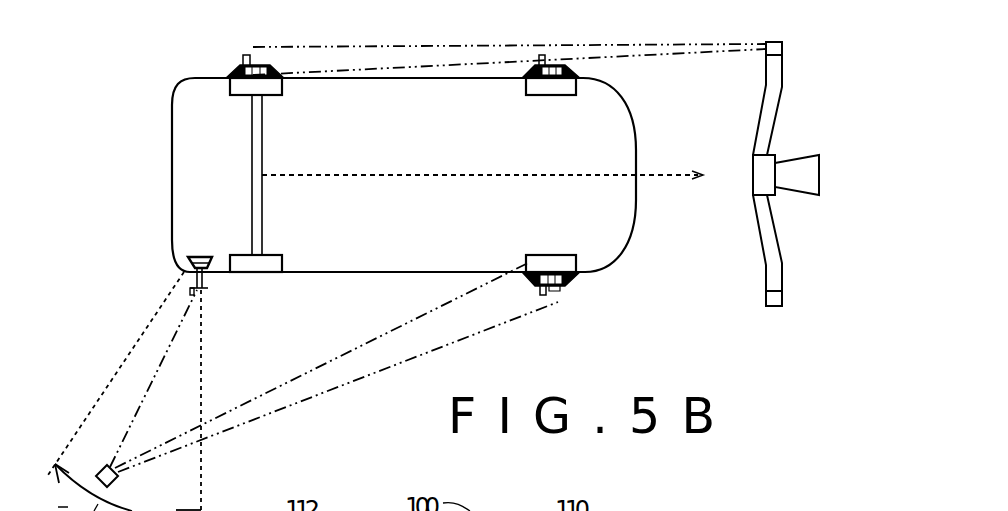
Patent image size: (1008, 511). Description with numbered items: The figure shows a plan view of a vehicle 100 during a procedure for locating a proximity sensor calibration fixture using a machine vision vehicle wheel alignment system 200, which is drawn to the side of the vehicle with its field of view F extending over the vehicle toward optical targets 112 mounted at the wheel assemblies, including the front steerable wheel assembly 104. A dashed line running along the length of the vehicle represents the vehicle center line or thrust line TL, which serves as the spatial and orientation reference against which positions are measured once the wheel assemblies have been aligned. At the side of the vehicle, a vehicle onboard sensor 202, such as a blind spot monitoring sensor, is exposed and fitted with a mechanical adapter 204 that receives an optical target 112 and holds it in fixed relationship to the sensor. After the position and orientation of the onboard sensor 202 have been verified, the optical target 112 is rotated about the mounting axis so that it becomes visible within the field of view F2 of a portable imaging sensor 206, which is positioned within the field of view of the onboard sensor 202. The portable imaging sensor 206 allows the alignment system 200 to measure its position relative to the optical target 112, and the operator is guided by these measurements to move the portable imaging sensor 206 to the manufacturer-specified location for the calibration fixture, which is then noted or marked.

The vehicle 100 is at (434, 112).
The front steerable wheel assembly 104 is at (560, 260).
The optical target 112 is at (251, 58).
The machine vision vehicle wheel alignment system 200 is at (842, 186).
The vehicle onboard sensor 202 is at (200, 256).
The mechanical adapter 204 is at (190, 283).
The portable imaging sensor 206 is at (118, 486).
The field of view F is at (666, 52).
The field of view F2 is at (178, 344).
The thrust line TL is at (316, 170).